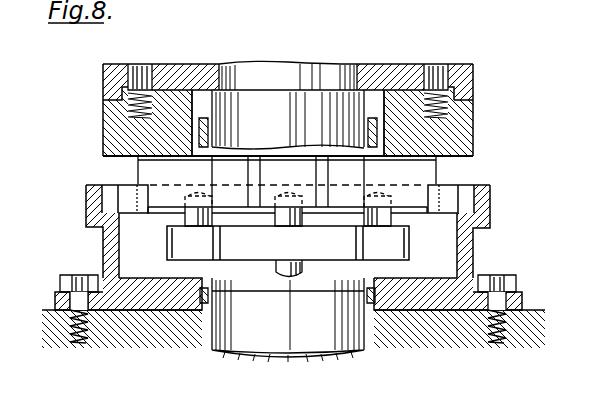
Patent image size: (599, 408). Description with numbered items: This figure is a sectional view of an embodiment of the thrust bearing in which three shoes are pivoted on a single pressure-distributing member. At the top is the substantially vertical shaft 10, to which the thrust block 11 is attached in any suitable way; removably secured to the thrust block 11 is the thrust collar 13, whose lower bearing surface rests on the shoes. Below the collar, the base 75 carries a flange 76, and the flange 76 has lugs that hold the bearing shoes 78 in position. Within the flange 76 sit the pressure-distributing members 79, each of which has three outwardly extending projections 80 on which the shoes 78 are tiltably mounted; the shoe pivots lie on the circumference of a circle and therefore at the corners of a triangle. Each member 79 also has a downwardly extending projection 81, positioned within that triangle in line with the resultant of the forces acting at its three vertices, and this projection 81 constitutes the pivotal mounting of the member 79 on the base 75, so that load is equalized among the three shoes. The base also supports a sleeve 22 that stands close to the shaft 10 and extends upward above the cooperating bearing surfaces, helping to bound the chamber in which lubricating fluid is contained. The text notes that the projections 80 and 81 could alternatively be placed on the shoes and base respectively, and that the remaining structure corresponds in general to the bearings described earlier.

The shaft 10 is at (255, 338).
The thrust block 11 is at (473, 78).
The thrust collar 13 is at (443, 123).
The sleeve 22 is at (378, 290).
The base 75 is at (153, 295).
The flange 76 is at (103, 243).
The bearing shoes 78 is at (422, 178).
The pressure-distributing members 79 is at (288, 243).
The outwardly extending projections 80 is at (192, 216).
The downwardly extending projection 81 is at (275, 266).